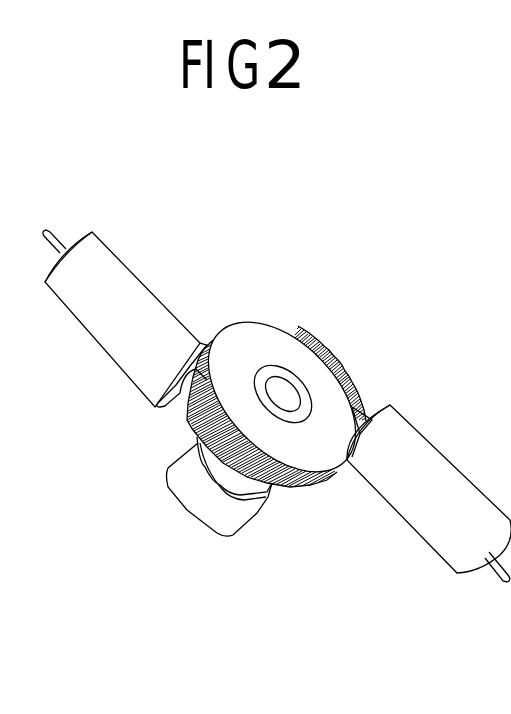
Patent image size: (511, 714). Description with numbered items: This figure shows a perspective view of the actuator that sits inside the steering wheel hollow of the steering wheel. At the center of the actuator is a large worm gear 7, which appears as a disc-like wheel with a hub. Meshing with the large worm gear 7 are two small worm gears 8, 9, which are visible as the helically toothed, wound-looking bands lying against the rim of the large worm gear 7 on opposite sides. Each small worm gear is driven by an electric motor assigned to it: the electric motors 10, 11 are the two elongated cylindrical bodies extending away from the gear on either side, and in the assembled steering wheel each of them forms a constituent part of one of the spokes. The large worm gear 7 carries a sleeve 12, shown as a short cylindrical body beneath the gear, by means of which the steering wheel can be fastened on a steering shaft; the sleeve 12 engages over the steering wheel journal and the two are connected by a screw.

The large worm gear 7 is at (235, 348).
The small worm gear 8 is at (322, 350).
The small worm gear 9 is at (192, 422).
The electric motor 10 is at (423, 460).
The electric motor 11 is at (105, 323).
The sleeve 12 is at (193, 498).